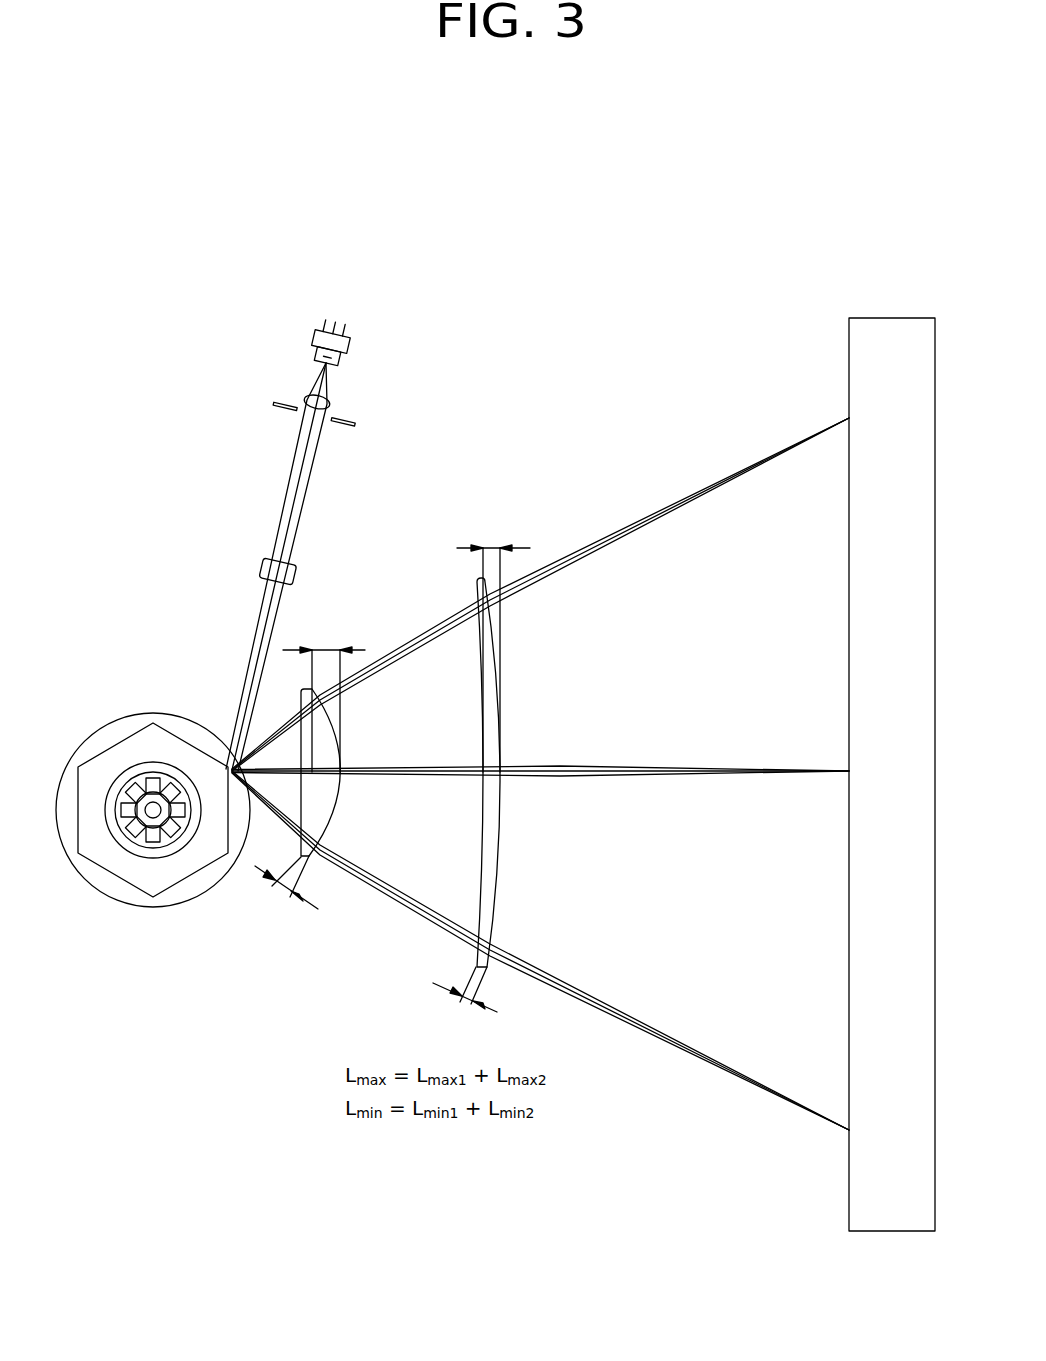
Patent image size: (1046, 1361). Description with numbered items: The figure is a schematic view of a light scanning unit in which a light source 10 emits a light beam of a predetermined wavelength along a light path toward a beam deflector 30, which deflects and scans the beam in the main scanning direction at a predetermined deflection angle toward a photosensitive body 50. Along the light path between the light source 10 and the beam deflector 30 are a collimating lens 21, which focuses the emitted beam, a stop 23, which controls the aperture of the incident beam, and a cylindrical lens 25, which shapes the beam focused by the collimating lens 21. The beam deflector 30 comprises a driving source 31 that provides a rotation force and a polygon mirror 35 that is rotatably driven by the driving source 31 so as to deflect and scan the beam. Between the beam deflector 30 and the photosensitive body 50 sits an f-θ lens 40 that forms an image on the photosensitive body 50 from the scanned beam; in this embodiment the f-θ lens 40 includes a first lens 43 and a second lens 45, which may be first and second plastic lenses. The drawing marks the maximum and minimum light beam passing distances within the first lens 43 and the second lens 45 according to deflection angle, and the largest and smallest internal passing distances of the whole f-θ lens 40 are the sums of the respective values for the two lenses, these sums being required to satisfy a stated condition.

The light source 10 is at (301, 331).
The collimating lens 21 is at (306, 397).
The stop 23 is at (278, 409).
The cylindrical lens 25 is at (258, 568).
The beam deflector 30 is at (151, 849).
The driving source 31 is at (158, 908).
The polygon mirror 35 is at (177, 883).
The f-θ lens 40 is at (391, 778).
The first lens 43 is at (330, 832).
The second lens 45 is at (478, 862).
The photosensitive body 50 is at (897, 1233).